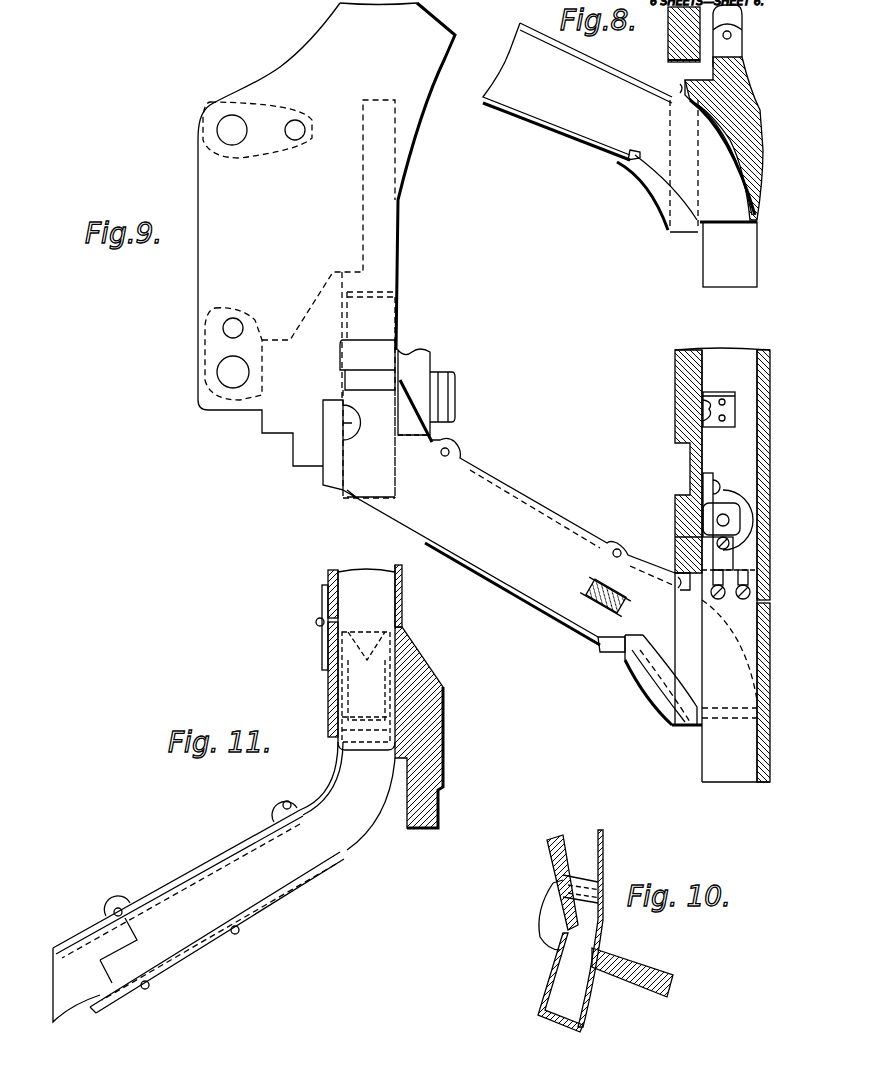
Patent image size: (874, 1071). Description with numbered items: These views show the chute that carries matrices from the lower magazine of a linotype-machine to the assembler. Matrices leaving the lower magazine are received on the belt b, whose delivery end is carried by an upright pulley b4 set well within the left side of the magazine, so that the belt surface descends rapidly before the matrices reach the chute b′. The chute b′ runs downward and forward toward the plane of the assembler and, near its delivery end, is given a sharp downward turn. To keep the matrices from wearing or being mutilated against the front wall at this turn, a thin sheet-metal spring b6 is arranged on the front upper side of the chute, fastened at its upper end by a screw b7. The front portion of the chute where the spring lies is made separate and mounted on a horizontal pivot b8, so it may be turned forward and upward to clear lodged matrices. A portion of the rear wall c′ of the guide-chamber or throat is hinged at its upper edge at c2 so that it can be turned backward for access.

In FIG. 9, the belt b is at (378, 300).
In FIG. 8, the chute b′ is at (590, 127).
In FIG. 9, the chute b′ is at (556, 565).
In FIG. 11, the chute b′ is at (248, 793).
In FIG. 10, the chute b′ is at (605, 928).
In FIG. 9, the upright pulley b4 is at (400, 298).
In FIG. 8, the sheet-metal spring b6 is at (758, 165).
In FIG. 8, the screw b7 is at (682, 88).
In FIG. 8, the horizontal pivot b8 is at (735, 35).
In FIG. 11, the rear wall portion c′ is at (328, 641).
In FIG. 11, the hinge c2 is at (317, 619).